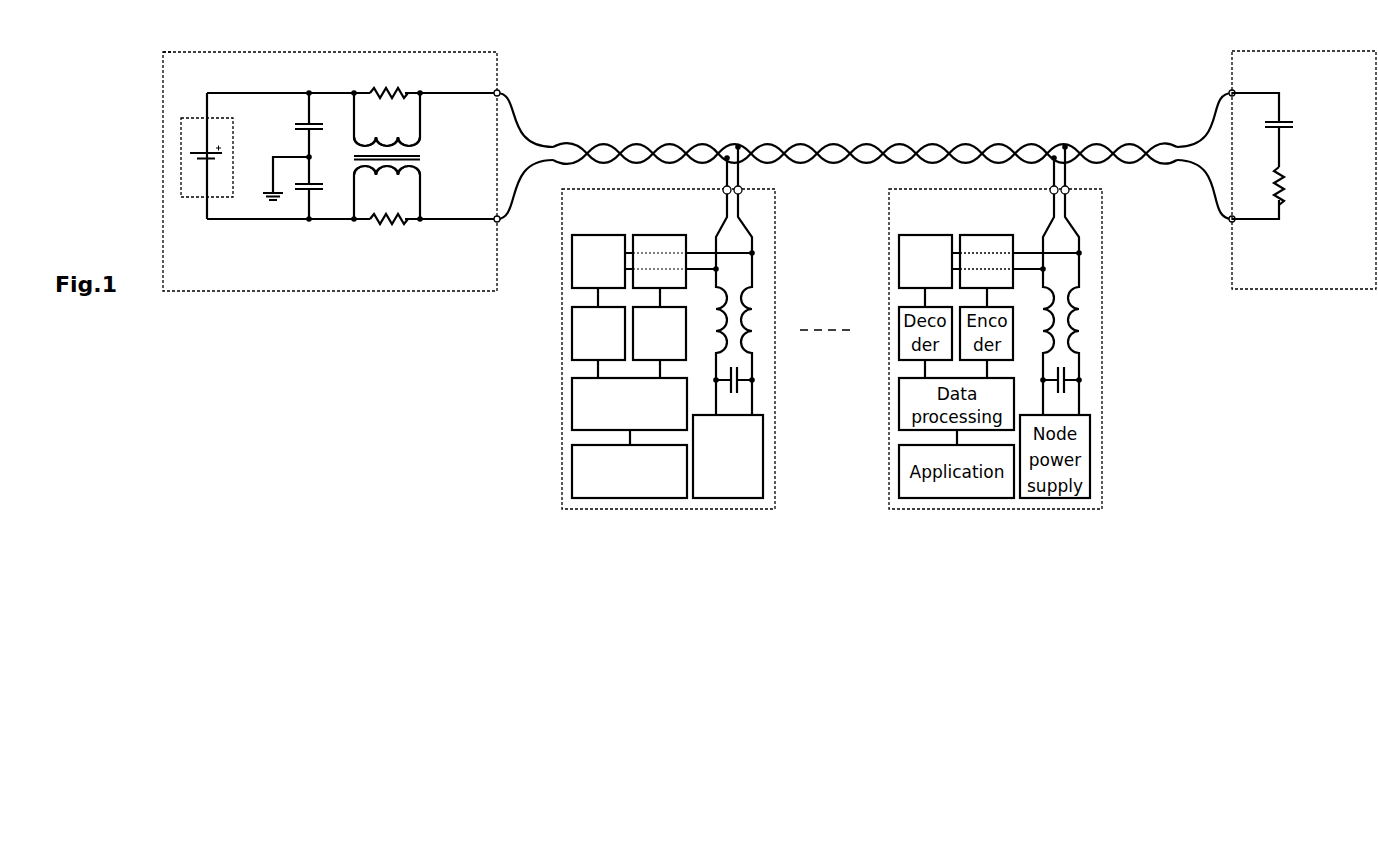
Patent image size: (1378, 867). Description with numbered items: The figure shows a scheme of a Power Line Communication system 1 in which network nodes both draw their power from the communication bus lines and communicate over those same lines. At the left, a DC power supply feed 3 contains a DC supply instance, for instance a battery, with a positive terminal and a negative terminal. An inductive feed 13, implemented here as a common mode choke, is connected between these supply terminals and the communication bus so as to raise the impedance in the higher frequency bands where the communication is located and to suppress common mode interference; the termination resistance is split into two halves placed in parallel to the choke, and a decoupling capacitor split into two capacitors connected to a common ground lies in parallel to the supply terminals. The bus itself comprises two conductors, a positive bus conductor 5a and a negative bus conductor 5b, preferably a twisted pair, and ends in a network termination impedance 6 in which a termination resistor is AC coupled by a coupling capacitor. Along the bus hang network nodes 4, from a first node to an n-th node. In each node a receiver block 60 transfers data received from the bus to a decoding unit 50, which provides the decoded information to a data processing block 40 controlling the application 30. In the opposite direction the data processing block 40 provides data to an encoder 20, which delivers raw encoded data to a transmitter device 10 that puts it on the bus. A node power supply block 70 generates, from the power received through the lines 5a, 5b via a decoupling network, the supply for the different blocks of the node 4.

The PLC system 1 is at (171, 46).
The DC power supply feed 3 is at (459, 292).
The network node 4 is at (651, 510).
The conductor B+ 5a is at (510, 106).
The conductor B- 5b is at (518, 182).
The network termination impedance 6 is at (1290, 291).
The transmitter device 10 is at (655, 235).
The inductive feed 13 is at (404, 154).
The encoder 20 is at (672, 336).
The application 30 is at (580, 460).
The data processing block 40 is at (580, 395).
The decoding unit 50 is at (578, 328).
The receiver block 60 is at (580, 270).
The node power supply block 70 is at (745, 445).